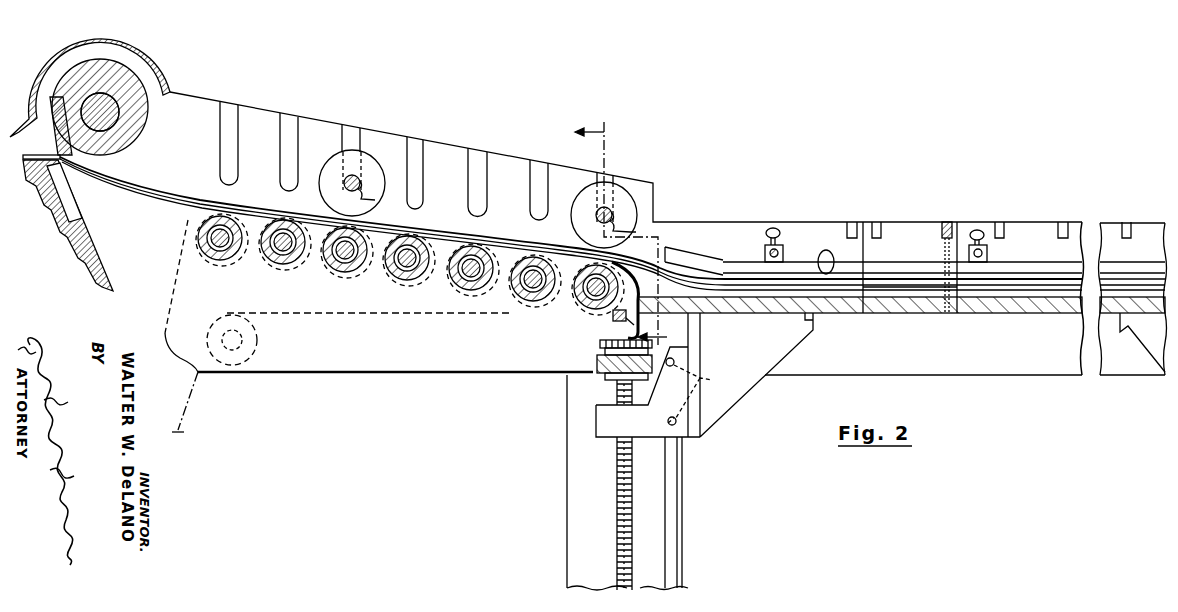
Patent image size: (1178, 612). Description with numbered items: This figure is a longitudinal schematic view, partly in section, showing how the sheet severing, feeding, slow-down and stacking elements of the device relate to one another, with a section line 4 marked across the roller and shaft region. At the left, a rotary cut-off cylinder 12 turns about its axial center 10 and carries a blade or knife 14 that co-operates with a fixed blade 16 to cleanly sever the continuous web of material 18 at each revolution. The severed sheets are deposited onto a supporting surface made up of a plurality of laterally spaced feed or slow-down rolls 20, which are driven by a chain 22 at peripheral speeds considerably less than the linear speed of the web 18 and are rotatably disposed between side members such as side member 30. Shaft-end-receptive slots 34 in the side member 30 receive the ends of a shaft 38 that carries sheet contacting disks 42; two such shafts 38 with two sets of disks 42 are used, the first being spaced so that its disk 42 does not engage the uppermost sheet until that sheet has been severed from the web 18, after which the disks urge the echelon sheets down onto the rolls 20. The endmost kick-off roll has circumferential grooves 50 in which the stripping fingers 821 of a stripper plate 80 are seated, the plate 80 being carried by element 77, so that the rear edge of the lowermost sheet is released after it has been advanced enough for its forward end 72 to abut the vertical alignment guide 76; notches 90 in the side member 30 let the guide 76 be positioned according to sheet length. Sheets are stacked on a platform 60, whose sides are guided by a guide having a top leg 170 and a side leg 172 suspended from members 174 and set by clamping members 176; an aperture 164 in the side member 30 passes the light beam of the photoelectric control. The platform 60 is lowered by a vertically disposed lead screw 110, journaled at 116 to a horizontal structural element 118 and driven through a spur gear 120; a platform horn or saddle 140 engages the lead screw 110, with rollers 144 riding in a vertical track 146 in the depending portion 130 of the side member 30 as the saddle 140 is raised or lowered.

The section line 4- 4 is at (628, 235).
The axial center of rotary cut-off cylinder 10 is at (131, 141).
The rotary cut-off cylinder 12 is at (144, 113).
The blade or knife 14 is at (54, 116).
The fixed blade 16 is at (67, 199).
The continuous strip or web of material 18 is at (28, 156).
The feed or slow-down rolls 20 is at (492, 284).
The chain 22 is at (172, 290).
The side member 30 is at (387, 138).
The shaft-end-receptive slots 34 is at (611, 175).
The shaft 38 is at (645, 232).
The sheet contacting rollers or disks 42 is at (582, 203).
The circumferential grooves 50 is at (578, 298).
The platform 60 is at (933, 306).
The forward end of lowermost echelon sheet 72 is at (906, 288).
The vertical alignment guide 76 is at (945, 252).
The element carrying stripper plate 77 is at (606, 339).
The stripper plate 80 is at (612, 316).
The laterally spaced notches 90 is at (1126, 222).
The lead screw 110 is at (617, 504).
The upper journal of lead screw 116 is at (610, 395).
The horizontal structural element 118 is at (606, 378).
The spur gear 120 is at (601, 355).
The depending portion of side member 130 is at (683, 521).
The platform horn or saddle 140 is at (1148, 338).
The rollers 144 is at (704, 391).
The vertical track 146 is at (672, 553).
The aperture 164 is at (821, 252).
The top leg of guide 170 is at (695, 255).
The side leg of guide 172 is at (1018, 270).
The members 174 is at (978, 258).
The clamping members 176 is at (976, 229).
The stripping fingers 821 is at (632, 278).